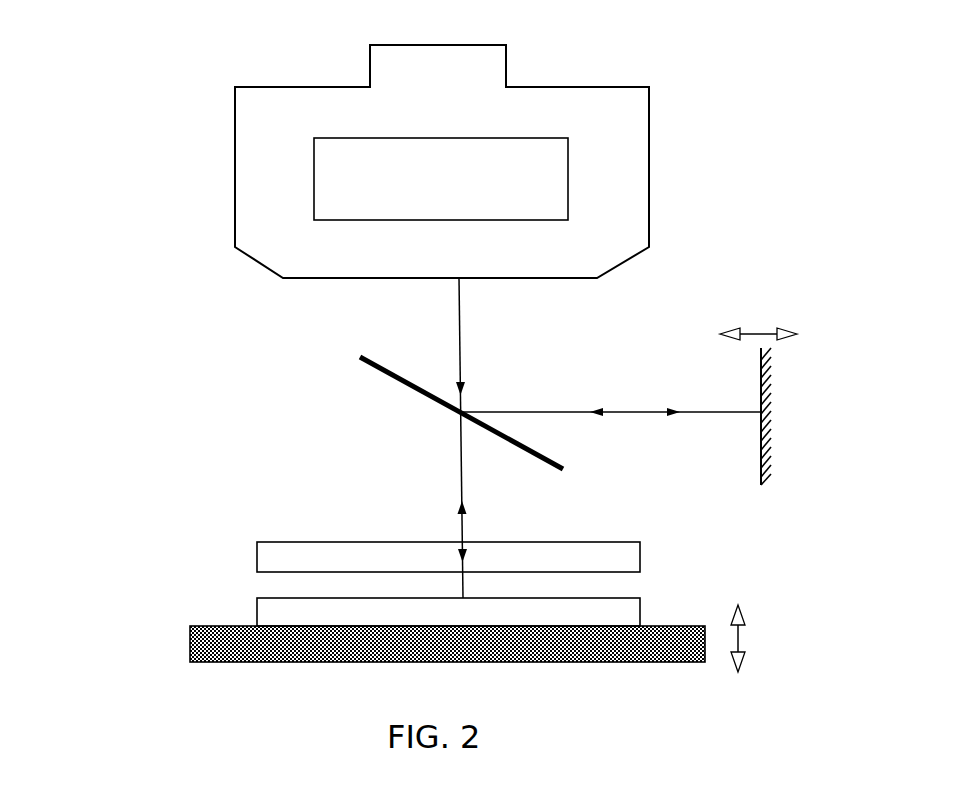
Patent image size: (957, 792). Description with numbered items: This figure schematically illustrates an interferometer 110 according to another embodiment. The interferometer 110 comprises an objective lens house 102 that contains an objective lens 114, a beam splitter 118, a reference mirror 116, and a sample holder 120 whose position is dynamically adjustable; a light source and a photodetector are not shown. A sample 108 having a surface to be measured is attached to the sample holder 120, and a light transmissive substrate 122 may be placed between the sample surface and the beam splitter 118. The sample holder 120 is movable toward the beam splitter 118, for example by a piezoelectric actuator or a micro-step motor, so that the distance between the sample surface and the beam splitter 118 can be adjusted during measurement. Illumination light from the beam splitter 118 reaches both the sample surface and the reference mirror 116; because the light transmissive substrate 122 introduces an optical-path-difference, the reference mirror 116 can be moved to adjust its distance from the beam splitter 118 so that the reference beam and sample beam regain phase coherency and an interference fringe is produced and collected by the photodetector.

The interferometer 110 is at (170, 94).
The objective lens house 102 is at (648, 128).
The objective lens 114 is at (401, 192).
The beam splitter 118 is at (382, 373).
The reference mirror 116 is at (770, 392).
The light transmissive substrate 122 is at (608, 537).
The sample 108 is at (642, 598).
The sample holder 120 is at (207, 626).